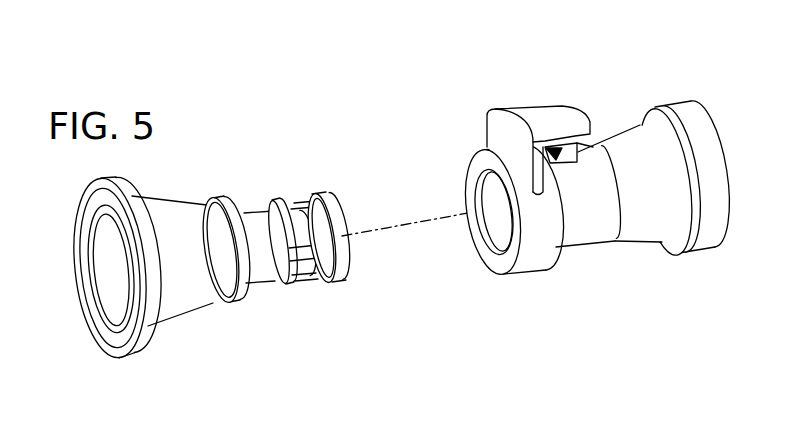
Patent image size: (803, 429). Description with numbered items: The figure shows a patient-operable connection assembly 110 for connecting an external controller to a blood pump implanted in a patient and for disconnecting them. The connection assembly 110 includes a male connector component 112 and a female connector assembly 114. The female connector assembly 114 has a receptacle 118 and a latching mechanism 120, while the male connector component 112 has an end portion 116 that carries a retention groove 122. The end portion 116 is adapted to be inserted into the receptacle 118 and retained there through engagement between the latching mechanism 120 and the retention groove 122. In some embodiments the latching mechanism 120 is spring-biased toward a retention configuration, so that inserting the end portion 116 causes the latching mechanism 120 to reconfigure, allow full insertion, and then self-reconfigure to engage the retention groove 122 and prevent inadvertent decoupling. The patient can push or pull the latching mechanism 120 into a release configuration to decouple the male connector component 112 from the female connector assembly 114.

The patient-operable connection assembly 110 is at (300, 124).
The male connector component 112 is at (219, 340).
The female connector assembly 114 is at (603, 305).
The end portion 116 is at (315, 192).
The receptacle 118 is at (478, 238).
The latching mechanism 120 is at (575, 68).
The retention groove 122 is at (280, 310).